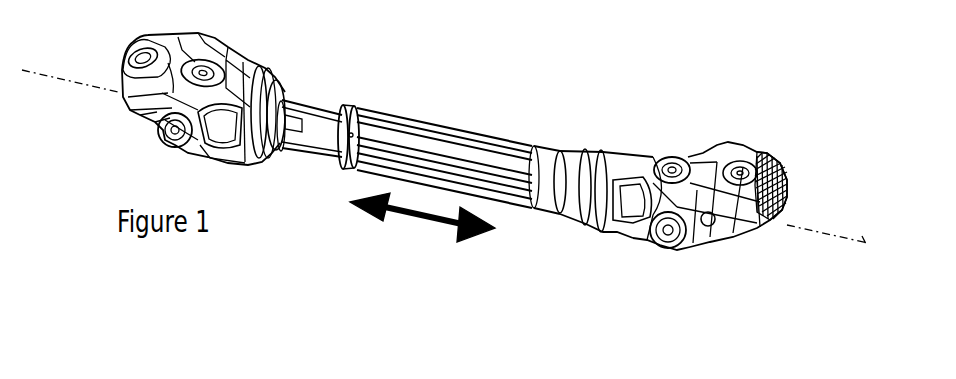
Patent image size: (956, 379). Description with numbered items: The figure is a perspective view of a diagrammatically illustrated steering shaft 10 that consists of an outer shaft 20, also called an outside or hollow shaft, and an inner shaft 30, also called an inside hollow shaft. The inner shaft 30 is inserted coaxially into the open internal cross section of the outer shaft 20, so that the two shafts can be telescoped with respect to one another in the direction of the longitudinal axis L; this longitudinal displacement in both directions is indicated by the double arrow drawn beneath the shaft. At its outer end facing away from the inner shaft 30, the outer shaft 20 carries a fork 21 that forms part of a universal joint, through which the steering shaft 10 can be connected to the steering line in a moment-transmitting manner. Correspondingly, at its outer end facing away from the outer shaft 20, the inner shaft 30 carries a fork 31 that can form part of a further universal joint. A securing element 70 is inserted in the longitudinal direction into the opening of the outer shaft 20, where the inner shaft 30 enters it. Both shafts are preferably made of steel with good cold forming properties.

The steering shaft 10 is at (472, 77).
The outer shaft 20 is at (483, 128).
The fork 21 is at (653, 114).
The inner shaft 30 is at (318, 128).
The fork 31 is at (265, 58).
The securing element 70 is at (353, 135).
The longitudinal axis L is at (861, 238).